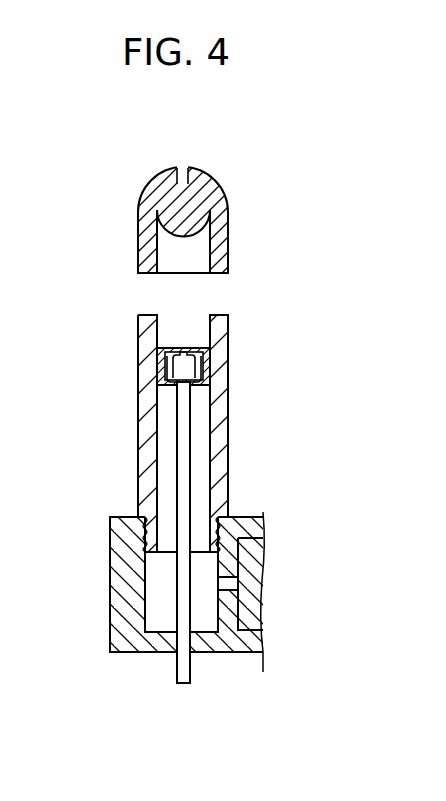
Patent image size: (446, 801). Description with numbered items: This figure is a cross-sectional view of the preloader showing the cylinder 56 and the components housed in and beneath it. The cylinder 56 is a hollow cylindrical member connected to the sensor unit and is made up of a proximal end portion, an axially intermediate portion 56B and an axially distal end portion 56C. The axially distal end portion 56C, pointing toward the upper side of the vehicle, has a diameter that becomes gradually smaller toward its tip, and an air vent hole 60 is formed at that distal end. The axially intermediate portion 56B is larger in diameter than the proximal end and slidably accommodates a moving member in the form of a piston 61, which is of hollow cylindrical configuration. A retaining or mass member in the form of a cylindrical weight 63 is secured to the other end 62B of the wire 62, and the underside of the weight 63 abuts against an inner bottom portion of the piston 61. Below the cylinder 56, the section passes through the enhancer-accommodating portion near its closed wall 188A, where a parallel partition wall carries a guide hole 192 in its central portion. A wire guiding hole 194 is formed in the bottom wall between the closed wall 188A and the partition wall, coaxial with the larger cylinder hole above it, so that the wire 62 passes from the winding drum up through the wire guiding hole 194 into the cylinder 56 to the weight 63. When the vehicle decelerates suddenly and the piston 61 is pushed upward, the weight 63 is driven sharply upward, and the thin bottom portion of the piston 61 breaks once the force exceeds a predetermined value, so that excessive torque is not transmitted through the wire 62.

The cylinder 56 is at (137, 198).
The axially distal end portion 56C is at (140, 221).
The axially intermediate portion 56B is at (139, 328).
The air vent hole 60 is at (181, 172).
The piston 61 is at (210, 352).
The cylindrical weight 63 is at (198, 348).
The wire 62 is at (121, 558).
The other end of the wire 62B is at (178, 413).
The closed wall 188A is at (140, 625).
The guide hole 192 is at (224, 580).
The wire guiding hole 194 is at (177, 652).